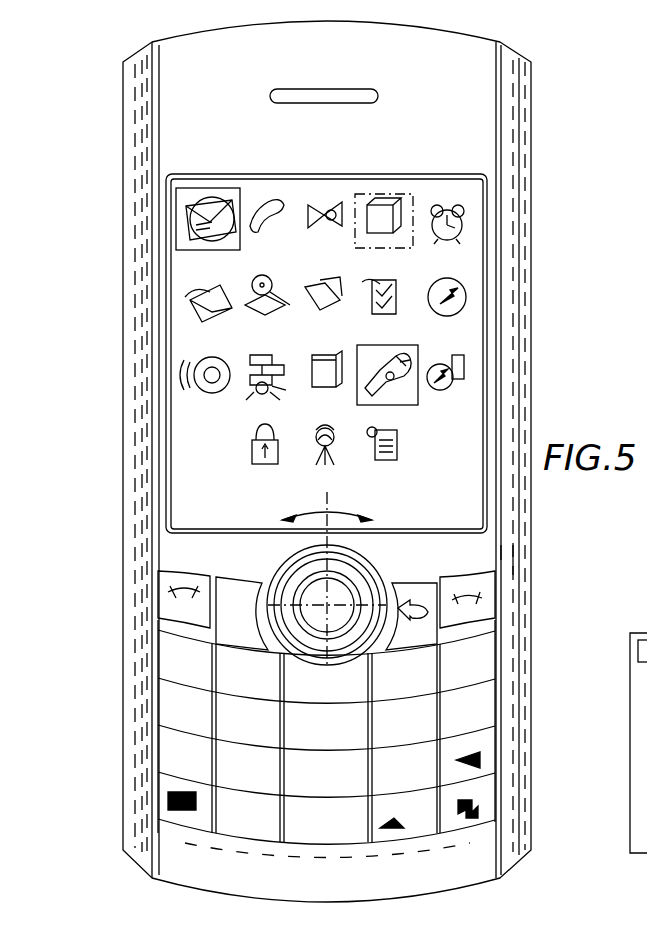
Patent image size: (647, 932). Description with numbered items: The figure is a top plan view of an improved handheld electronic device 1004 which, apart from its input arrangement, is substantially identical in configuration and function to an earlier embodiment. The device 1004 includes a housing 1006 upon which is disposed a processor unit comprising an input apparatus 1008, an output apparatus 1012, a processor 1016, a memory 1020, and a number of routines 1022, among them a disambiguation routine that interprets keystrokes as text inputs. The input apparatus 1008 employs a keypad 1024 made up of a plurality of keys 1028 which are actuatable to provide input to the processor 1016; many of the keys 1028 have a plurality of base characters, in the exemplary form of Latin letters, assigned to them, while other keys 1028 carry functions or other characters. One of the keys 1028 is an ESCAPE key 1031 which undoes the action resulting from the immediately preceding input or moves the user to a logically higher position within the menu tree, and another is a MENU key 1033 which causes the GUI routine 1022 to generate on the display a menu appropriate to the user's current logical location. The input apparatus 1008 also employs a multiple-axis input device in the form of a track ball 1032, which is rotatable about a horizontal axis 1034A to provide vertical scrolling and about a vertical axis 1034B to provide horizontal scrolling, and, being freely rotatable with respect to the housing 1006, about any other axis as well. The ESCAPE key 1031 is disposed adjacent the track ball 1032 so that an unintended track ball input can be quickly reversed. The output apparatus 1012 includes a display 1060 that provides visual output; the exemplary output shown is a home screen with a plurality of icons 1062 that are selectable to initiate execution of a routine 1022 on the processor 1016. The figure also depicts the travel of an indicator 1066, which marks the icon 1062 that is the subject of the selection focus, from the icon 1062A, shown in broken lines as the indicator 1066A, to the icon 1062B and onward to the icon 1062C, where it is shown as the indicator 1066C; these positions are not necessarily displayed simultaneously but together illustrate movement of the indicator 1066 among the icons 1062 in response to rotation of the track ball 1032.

The handheld electronic device 1004 is at (556, 75).
The housing 1006 is at (533, 138).
The input apparatus 1008 is at (318, 585).
The output apparatus 1012 is at (468, 240).
The processor 1016 is at (482, 545).
The memory 1020 is at (472, 553).
The routines 1022 is at (482, 560).
The keypad 1024 is at (499, 686).
The keys 1028 is at (158, 648).
The ESCAPE key 1031 is at (420, 582).
The track ball 1032 is at (340, 582).
The MENU key 1033 is at (224, 572).
The horizontal axis 1034A is at (264, 580).
The vertical axis 1034B is at (327, 496).
The display 1060 is at (450, 194).
The icons 1062 is at (208, 196).
The icon 1062A is at (232, 200).
The icon 1062B is at (390, 200).
The icon 1062C is at (390, 400).
The indicator 1066 is at (395, 250).
The indicator 1066A is at (187, 251).
The indicator 1066C is at (357, 400).